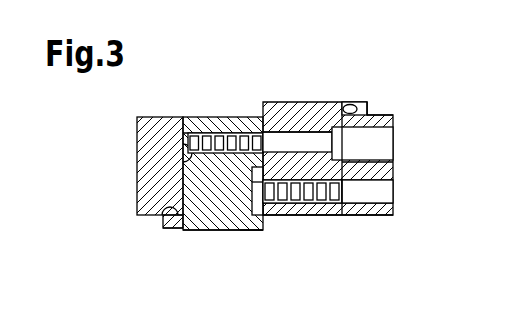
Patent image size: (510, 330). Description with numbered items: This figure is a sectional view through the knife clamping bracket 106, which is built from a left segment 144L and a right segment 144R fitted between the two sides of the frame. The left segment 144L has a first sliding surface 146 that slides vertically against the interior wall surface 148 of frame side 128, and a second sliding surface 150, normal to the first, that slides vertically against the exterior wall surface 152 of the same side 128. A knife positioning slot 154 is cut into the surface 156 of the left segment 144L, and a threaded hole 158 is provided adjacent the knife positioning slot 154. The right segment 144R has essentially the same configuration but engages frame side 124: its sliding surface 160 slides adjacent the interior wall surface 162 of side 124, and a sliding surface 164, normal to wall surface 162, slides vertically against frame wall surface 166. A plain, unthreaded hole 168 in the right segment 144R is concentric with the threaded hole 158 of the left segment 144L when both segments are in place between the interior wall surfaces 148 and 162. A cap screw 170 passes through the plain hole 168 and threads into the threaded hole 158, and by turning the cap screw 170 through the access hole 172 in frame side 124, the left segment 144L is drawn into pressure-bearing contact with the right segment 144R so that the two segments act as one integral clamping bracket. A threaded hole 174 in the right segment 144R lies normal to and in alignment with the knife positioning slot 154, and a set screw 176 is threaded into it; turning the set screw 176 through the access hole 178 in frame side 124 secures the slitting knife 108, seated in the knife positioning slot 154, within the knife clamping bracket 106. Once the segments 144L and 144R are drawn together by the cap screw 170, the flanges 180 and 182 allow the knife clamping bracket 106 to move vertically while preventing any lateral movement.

The knife clamping bracket 106 is at (128, 120).
The slitting knife 108 is at (215, 199).
The side of frame 124 is at (388, 208).
The side of frame 128 is at (150, 146).
The left segment 144L is at (212, 117).
The right segment 144R is at (342, 102).
The first sliding surface 146 is at (212, 230).
The interior wall surface 148 is at (186, 160).
The second sliding surface 150 is at (165, 223).
The exterior wall surface 152 is at (163, 209).
The knife positioning slot 154 is at (279, 207).
The surface of segment 144L 156 is at (256, 212).
The threaded hole 158 is at (241, 133).
The sliding surface 160 is at (350, 203).
The interior wall surface 162 is at (346, 112).
The sliding surface 164 is at (363, 115).
The frame wall surface 166 is at (393, 115).
The plain hole 168 is at (284, 137).
The cap screw 170 is at (306, 143).
The access hole 172 is at (375, 162).
The threaded hole 174 is at (340, 187).
The set screw 176 is at (250, 216).
The access hole 178 is at (375, 198).
The flange 180 is at (173, 229).
The flange 182 is at (363, 112).